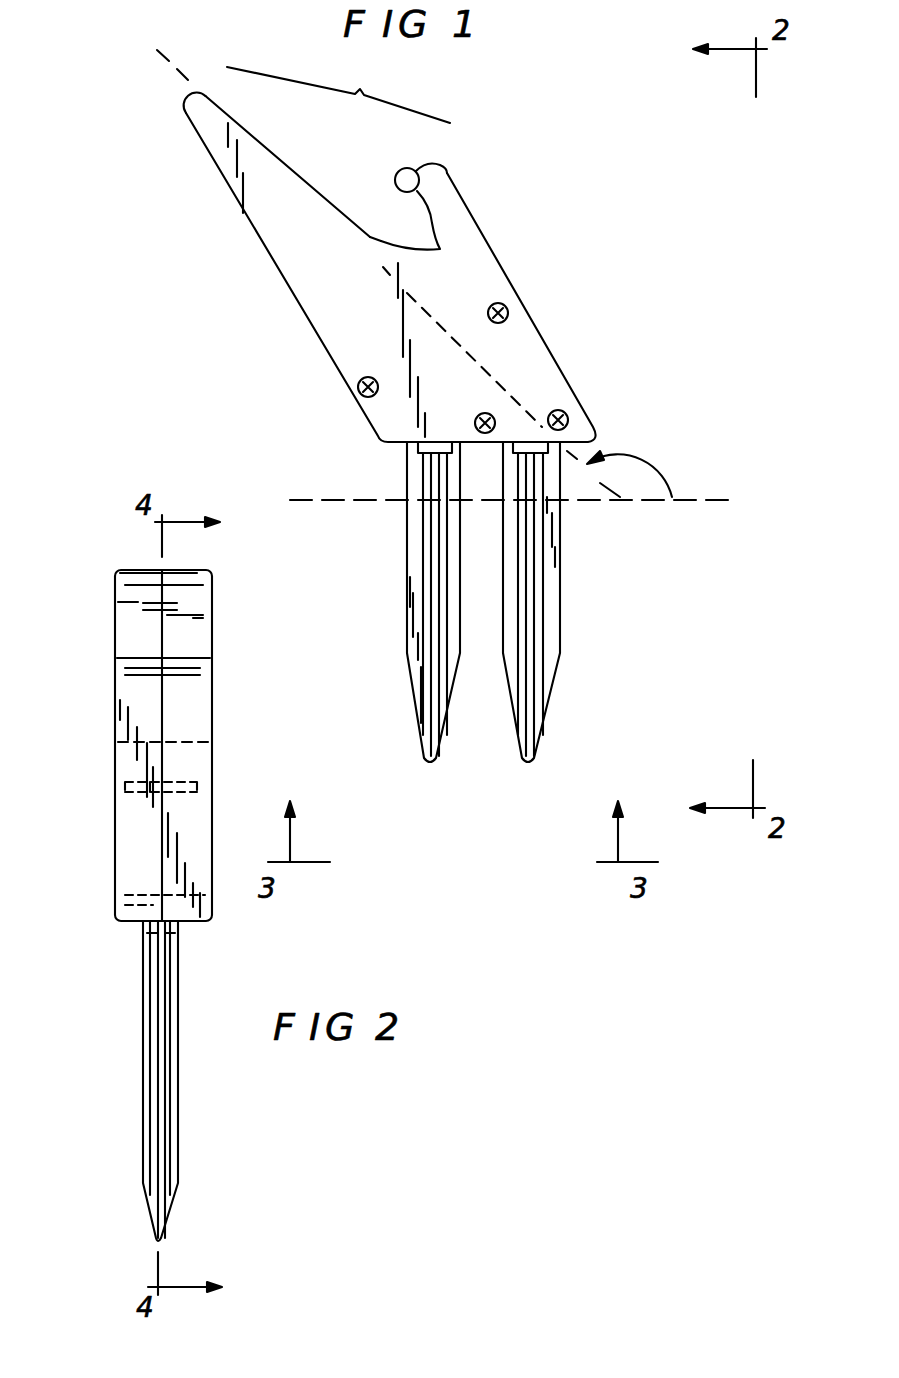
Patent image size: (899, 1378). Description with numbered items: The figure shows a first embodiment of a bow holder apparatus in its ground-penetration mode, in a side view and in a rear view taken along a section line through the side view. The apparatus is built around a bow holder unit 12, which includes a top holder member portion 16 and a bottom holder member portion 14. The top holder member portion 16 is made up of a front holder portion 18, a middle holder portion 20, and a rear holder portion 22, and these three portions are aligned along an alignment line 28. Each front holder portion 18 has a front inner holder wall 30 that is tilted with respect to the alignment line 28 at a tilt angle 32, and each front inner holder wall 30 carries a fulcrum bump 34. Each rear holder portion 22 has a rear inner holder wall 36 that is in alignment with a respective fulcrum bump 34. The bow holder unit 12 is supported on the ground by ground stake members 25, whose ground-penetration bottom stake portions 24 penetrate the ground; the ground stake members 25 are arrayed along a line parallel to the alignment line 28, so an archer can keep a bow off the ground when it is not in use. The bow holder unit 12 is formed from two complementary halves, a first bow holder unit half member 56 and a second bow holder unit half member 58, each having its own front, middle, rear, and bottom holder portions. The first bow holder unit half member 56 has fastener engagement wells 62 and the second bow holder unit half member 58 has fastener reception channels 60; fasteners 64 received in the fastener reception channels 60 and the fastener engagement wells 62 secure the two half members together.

In FIG. 1, the bow holder unit 12 is at (407, 277).
In FIG. 2, the bow holder unit 12 is at (119, 745).
In FIG. 1, the bottom holder member portion 14 is at (527, 365).
In FIG. 1, the top holder member portion 16 is at (338, 89).
In FIG. 1, the front holder portion 18 is at (283, 186).
In FIG. 2, the front holder portion 18 is at (124, 628).
In FIG. 1, the middle holder portion 20 is at (443, 248).
In FIG. 1, the rear holder portion 22 is at (427, 175).
In FIG. 1, the ground-penetration bottom stake portion 24 is at (427, 655).
In FIG. 2, the ground-penetration bottom stake portion 24 is at (165, 1150).
In FIG. 1, the ground stake member 25 is at (398, 546).
In FIG. 2, the ground stake member 25 is at (186, 1006).
In FIG. 1, the alignment line 28 is at (687, 500).
In FIG. 1, the front inner holder wall 30 is at (306, 183).
In FIG. 1, the tilt angle 32 is at (646, 450).
In FIG. 1, the fulcrum bump 34 is at (375, 251).
In FIG. 1, the rear inner holder wall 36 is at (405, 175).
In FIG. 2, the first bow holder unit half member 56 is at (197, 759).
In FIG. 2, the second bow holder unit half member 58 is at (133, 753).
In FIG. 2, the fastener reception channel 60 is at (135, 793).
In FIG. 2, the fastener engagement well 62 is at (180, 781).
In FIG. 1, the fastener 64 is at (568, 420).
In FIG. 2, the fastener 64 is at (122, 788).